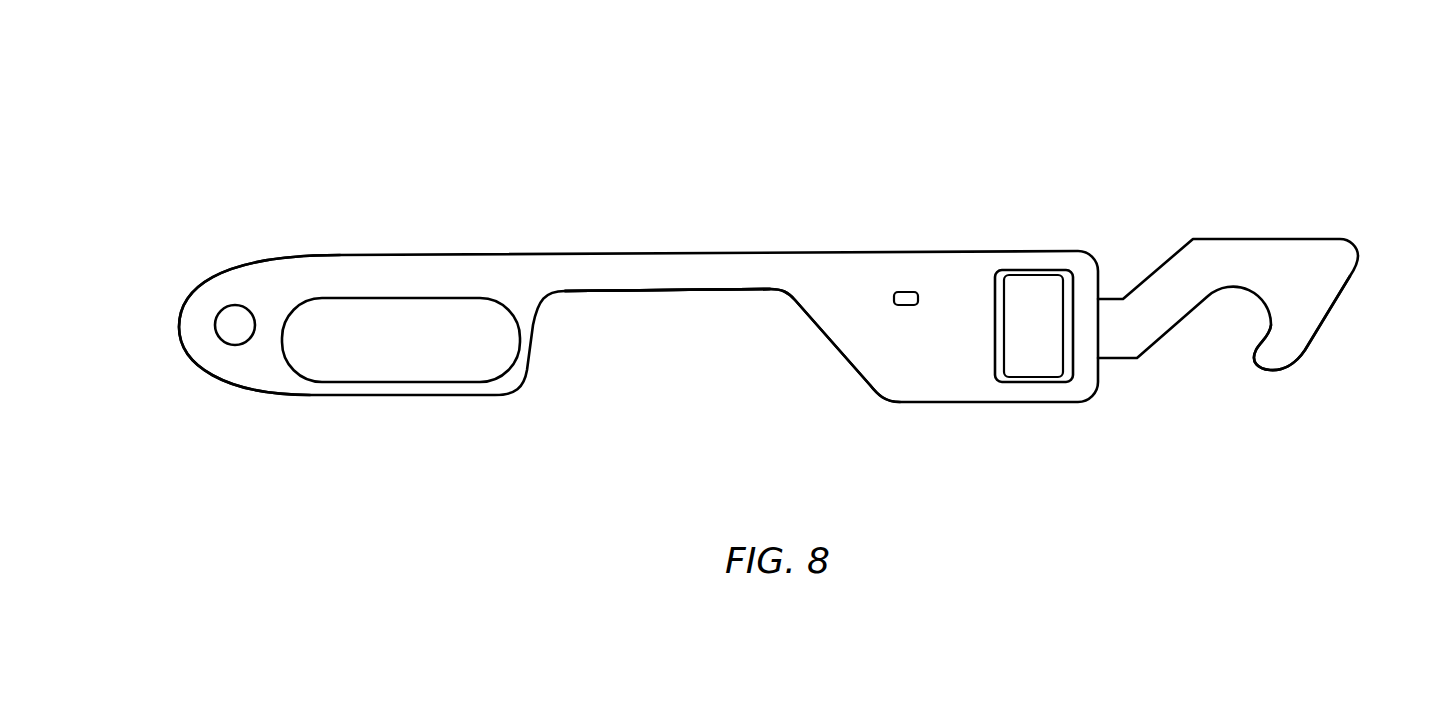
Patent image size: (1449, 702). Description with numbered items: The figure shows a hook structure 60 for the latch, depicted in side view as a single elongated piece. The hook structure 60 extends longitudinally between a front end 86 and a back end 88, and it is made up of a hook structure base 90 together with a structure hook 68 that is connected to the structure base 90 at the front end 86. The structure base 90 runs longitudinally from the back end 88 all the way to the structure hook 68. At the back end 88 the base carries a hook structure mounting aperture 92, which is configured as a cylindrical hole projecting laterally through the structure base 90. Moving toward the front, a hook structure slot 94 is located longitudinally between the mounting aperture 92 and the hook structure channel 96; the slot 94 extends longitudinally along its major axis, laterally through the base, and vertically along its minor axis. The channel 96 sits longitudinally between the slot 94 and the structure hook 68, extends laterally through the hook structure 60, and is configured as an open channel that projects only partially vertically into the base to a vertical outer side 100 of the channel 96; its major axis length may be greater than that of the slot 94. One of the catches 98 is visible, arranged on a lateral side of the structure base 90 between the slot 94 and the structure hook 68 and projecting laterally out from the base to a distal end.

The hook structure 60 is at (1068, 92).
The structure hook 68 is at (1324, 323).
The front end 86 is at (1359, 249).
The back end 88 is at (180, 323).
The hook structure base 90 is at (699, 224).
The hook structure mounting aperture 92 is at (223, 342).
The hook structure slot 94 is at (400, 382).
The hook structure channel 96 is at (677, 388).
The catch 98 is at (906, 291).
The vertical side 100 is at (703, 290).